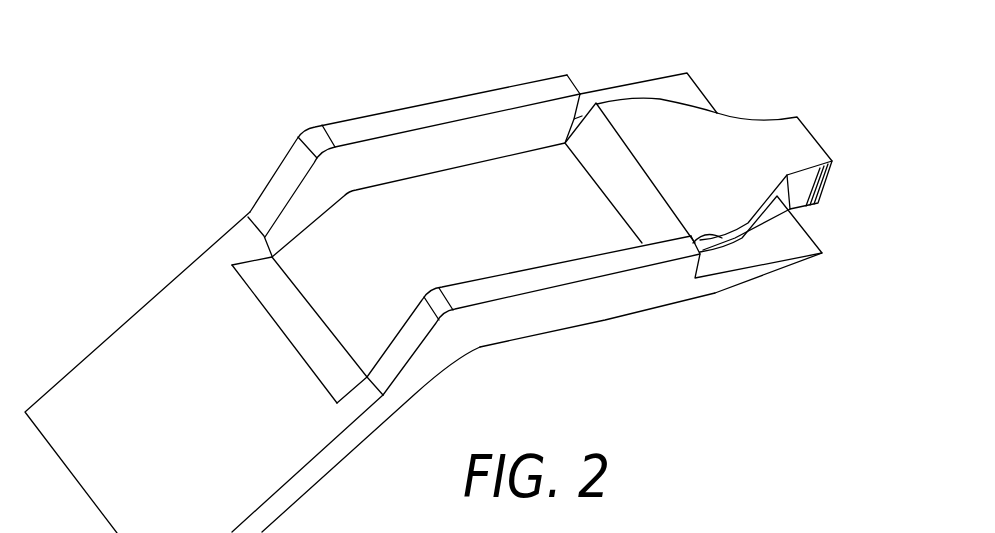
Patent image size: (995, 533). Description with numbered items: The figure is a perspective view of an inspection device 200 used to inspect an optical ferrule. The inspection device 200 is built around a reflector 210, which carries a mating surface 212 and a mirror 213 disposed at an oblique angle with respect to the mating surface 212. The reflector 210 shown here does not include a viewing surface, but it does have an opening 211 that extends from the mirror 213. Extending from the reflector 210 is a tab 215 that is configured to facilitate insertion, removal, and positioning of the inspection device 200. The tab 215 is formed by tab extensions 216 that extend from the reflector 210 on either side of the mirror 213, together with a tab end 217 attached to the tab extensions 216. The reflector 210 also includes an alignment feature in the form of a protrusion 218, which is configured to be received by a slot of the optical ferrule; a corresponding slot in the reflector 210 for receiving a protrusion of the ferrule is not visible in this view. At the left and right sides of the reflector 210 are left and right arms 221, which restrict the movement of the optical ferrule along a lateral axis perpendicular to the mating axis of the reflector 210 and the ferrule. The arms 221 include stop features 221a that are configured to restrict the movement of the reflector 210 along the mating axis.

The inspection device 200 is at (190, 77).
The reflector 210 is at (663, 88).
The opening 211 is at (495, 190).
The mating surface 212 is at (723, 150).
The mirror 213 is at (608, 203).
The tab 215 is at (156, 212).
The tab extensions 216 is at (378, 162).
The tab end 217 is at (138, 343).
The protrusion 218 is at (793, 145).
The left and right arms 221 is at (450, 98).
The stop features 221a is at (581, 84).